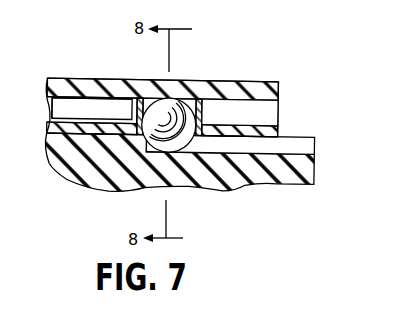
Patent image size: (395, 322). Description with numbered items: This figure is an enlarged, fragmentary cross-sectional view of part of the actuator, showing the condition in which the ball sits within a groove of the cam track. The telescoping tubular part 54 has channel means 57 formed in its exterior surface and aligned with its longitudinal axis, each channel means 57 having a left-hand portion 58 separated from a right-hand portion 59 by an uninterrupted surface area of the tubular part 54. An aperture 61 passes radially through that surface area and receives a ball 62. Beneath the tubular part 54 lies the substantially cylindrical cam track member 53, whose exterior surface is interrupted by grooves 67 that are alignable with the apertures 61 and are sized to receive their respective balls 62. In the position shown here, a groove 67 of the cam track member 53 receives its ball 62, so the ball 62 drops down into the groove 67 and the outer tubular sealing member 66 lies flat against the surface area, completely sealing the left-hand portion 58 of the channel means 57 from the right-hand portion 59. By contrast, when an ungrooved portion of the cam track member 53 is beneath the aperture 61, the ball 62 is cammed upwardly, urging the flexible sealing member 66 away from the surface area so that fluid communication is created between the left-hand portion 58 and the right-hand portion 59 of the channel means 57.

The cam track member 53 is at (89, 181).
The telescoping tubular part 54 is at (55, 120).
The channel means 57 is at (59, 104).
The left-hand portion 58 is at (81, 105).
The right-hand portion 59 is at (266, 113).
The aperture 61 is at (134, 105).
The ball 62 is at (174, 100).
The outer tubular sealing member 66 is at (253, 86).
The groove 67 is at (298, 144).